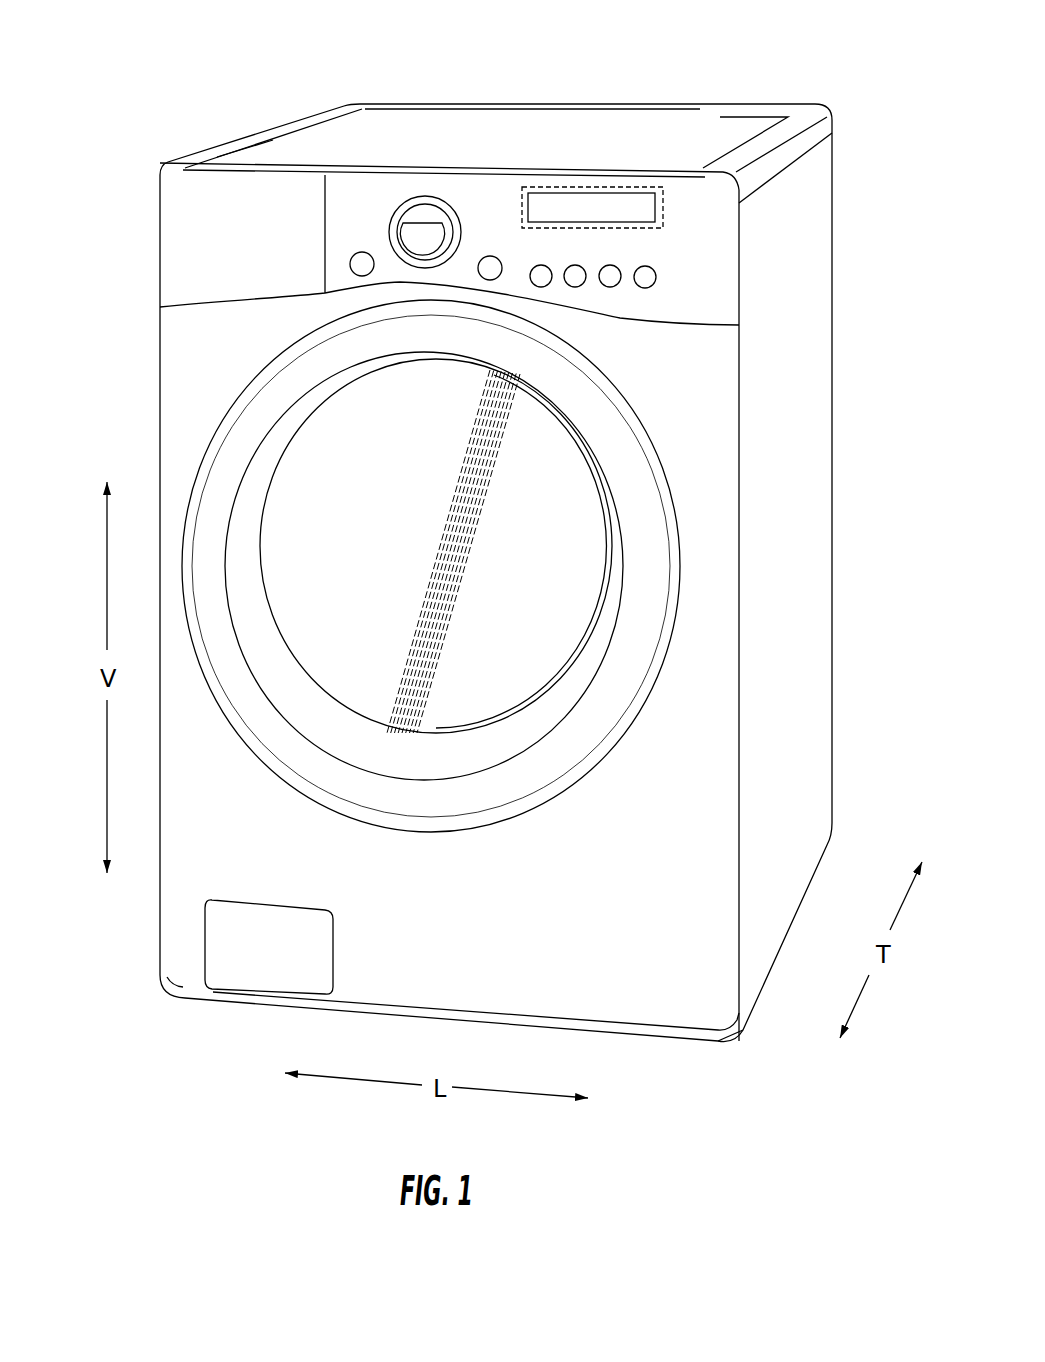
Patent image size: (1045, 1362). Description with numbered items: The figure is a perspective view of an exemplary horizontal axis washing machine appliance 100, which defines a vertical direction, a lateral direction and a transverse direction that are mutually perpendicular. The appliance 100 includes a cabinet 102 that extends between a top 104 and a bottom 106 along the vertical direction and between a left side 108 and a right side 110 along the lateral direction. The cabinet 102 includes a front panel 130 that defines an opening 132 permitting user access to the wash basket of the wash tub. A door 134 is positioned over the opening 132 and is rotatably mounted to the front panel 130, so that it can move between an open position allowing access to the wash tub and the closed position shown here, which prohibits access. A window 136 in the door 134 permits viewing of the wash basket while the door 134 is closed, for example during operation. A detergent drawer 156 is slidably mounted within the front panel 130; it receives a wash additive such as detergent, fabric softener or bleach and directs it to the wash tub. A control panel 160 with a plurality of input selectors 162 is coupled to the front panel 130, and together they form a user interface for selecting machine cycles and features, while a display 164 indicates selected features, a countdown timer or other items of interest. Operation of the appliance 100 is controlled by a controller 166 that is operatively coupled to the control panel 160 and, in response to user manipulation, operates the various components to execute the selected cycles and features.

The washing machine appliance 100 is at (137, 78).
The cabinet 102 is at (810, 415).
The top 104 is at (846, 110).
The bottom 106 is at (830, 882).
The left side 108 is at (167, 1002).
The right side 110 is at (736, 1045).
The front panel 130 is at (499, 566).
The opening 132 is at (641, 422).
The door 134 is at (657, 523).
The window 136 is at (530, 680).
The detergent drawer 156 is at (178, 200).
The control panel 160 is at (536, 165).
The input selectors 162 is at (418, 220).
The display 164 is at (602, 205).
The controller 166 is at (580, 186).